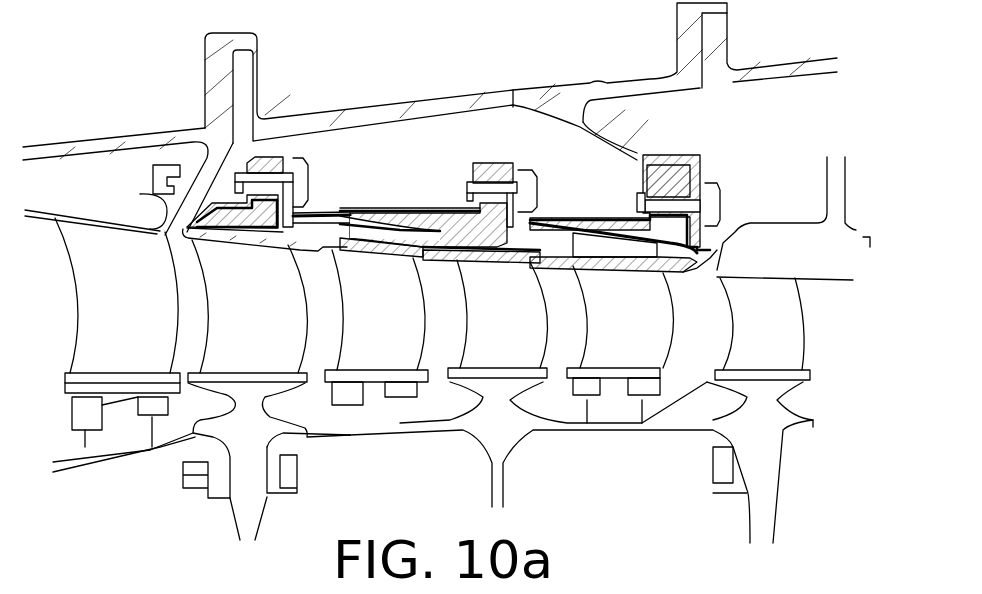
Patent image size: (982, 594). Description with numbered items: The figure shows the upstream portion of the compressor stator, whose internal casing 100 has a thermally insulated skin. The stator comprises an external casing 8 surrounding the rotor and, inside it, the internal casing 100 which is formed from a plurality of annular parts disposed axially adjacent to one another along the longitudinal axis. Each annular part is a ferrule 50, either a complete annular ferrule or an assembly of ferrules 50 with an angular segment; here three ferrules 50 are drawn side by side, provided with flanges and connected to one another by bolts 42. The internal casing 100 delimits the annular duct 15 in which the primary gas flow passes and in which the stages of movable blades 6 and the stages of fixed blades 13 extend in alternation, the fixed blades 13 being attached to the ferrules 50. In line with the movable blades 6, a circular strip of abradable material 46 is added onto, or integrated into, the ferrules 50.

The internal casing 100 is at (453, 129).
The ferrule 50 is at (548, 52).
The external casing 8 is at (602, 131).
The bolt 42 is at (722, 183).
The circular strip of abradable material 46 is at (243, 243).
The movable blades 6 is at (292, 312).
The fixed blades 13 is at (417, 310).
The annular duct 15 is at (712, 410).